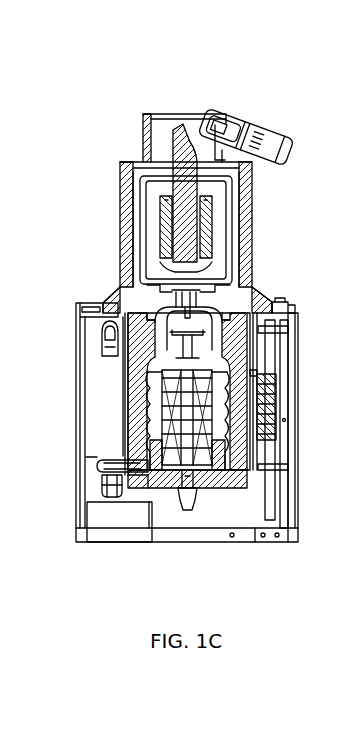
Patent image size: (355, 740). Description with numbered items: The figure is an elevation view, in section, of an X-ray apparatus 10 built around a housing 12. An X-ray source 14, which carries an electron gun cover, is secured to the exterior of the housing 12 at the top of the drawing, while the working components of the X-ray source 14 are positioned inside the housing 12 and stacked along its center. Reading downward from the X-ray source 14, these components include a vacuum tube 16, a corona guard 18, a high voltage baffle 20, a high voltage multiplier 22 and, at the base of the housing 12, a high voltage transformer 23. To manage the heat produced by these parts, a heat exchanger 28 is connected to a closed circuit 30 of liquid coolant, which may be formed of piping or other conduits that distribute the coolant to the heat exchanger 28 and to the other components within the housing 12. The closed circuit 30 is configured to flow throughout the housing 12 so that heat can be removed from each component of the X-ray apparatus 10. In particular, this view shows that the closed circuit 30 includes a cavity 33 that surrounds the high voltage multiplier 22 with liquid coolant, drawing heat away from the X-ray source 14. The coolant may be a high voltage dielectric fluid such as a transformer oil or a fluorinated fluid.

The X-ray apparatus 10 is at (152, 75).
The housing 12 is at (300, 433).
The X-ray source 14 is at (276, 120).
The vacuum tube 16 is at (221, 228).
The corona guard 18 is at (217, 309).
The high voltage baffle 20 is at (238, 348).
The high voltage multiplier 22 is at (219, 372).
The high voltage transformer 23 is at (130, 535).
The heat exchanger 28 is at (100, 394).
The closed circuit 30 is at (102, 480).
The cavity 33 is at (238, 428).